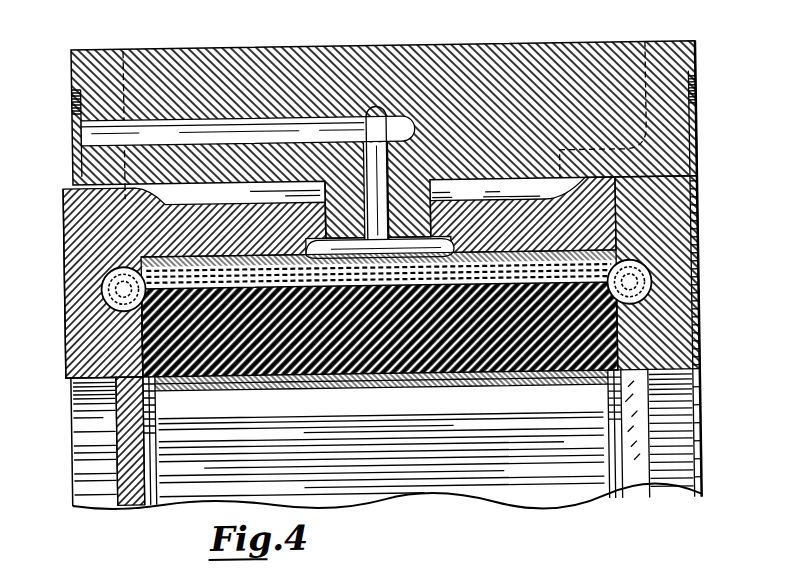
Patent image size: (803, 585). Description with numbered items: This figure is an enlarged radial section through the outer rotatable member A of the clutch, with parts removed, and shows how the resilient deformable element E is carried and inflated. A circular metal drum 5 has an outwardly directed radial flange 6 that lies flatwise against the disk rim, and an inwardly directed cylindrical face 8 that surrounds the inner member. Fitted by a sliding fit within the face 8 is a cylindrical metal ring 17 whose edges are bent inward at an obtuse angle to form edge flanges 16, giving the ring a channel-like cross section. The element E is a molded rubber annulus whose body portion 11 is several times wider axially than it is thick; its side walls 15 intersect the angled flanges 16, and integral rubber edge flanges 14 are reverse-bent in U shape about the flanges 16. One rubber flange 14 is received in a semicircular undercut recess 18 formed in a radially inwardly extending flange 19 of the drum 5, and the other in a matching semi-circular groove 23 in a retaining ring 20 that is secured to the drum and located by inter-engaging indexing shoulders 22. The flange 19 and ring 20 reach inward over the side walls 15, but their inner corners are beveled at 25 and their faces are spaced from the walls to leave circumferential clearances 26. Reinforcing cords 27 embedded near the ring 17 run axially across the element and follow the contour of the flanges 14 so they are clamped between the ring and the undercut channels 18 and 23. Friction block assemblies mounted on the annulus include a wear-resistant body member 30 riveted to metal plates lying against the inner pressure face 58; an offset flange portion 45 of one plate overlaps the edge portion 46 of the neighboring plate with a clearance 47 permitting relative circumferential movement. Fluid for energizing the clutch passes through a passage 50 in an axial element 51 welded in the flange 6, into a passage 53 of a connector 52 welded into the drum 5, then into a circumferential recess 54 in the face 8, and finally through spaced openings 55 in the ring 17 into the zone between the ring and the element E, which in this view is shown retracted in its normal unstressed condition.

The outer rotatable member A is at (526, 45).
The resilient deformable element E is at (600, 352).
The circular drum 5 is at (192, 225).
The radial flange 6 is at (148, 47).
The inwardly directed cylindrical face 8 is at (246, 262).
The body portion 11 is at (400, 392).
The rubber edge flanges 14 is at (100, 290).
The side walls 15 is at (123, 352).
The edge flanges of the ring 16 is at (120, 268).
The cylindrical metal ring 17 is at (548, 258).
The undercut recess 18 is at (138, 328).
The radially inwardly extending flange 19 is at (68, 380).
The retaining ring 20 is at (685, 368).
The indexing shoulders 22 is at (612, 156).
The semi-circular groove 23 is at (650, 300).
The beveled inner corners 25 is at (70, 441).
The clearances 26 is at (160, 396).
The reinforcing cords 27 is at (508, 260).
The contact or body member 30 is at (500, 414).
The offset flange portion 45 is at (452, 392).
The edge portion of the plate 46 is at (258, 393).
The clearance 47 is at (293, 393).
The passage 50 is at (192, 128).
The axial element 51 is at (255, 50).
The connector 52 is at (486, 195).
The passage 53 is at (388, 161).
The circumferentially extending channel or recess 54 is at (353, 242).
The spaced openings 55 is at (446, 246).
The inner pressure face 58 is at (375, 394).